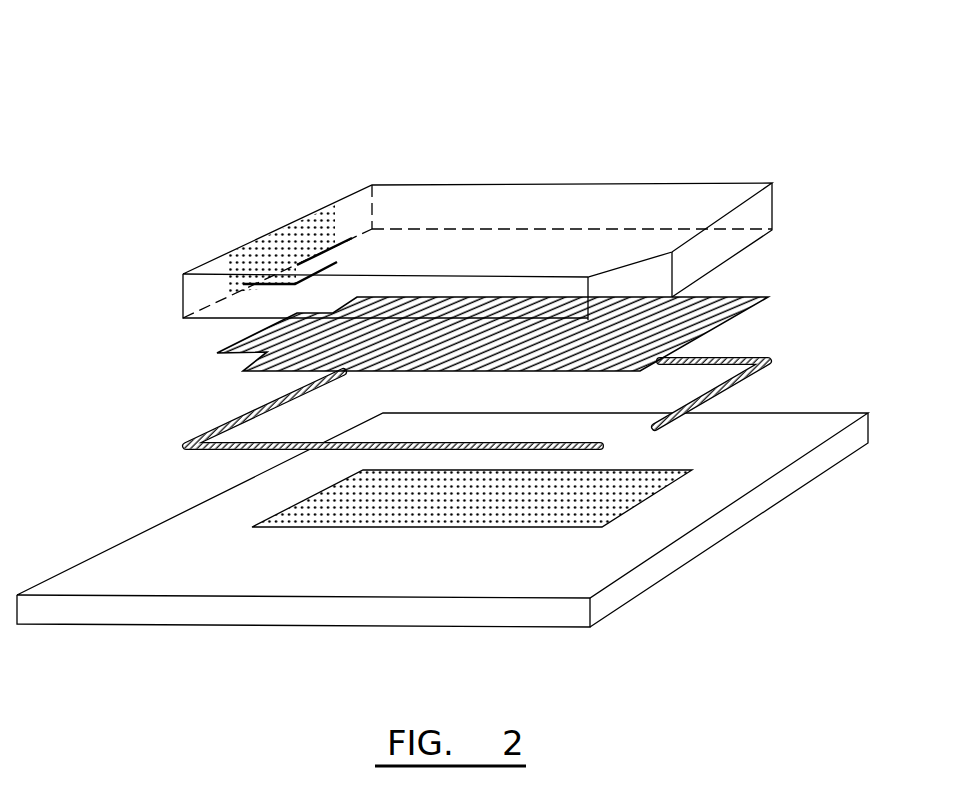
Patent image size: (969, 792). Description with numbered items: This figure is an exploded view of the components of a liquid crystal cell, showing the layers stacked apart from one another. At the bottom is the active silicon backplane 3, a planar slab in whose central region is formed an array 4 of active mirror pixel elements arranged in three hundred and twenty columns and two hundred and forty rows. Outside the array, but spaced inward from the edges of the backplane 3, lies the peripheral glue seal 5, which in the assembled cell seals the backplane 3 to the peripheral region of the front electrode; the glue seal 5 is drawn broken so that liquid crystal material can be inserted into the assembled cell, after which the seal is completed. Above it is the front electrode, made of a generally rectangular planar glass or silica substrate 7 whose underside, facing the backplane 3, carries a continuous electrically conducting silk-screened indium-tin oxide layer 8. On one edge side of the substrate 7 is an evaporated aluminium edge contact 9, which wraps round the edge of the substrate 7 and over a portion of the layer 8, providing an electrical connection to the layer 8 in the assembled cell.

The active silicon backplane 3 is at (177, 555).
The array of active mirror pixel elements 4 is at (627, 517).
The peripheral glue seal 5 is at (745, 355).
The substrate 7 is at (503, 205).
The indium-tin oxide layer 8 is at (213, 352).
The edge contact 9 is at (277, 235).